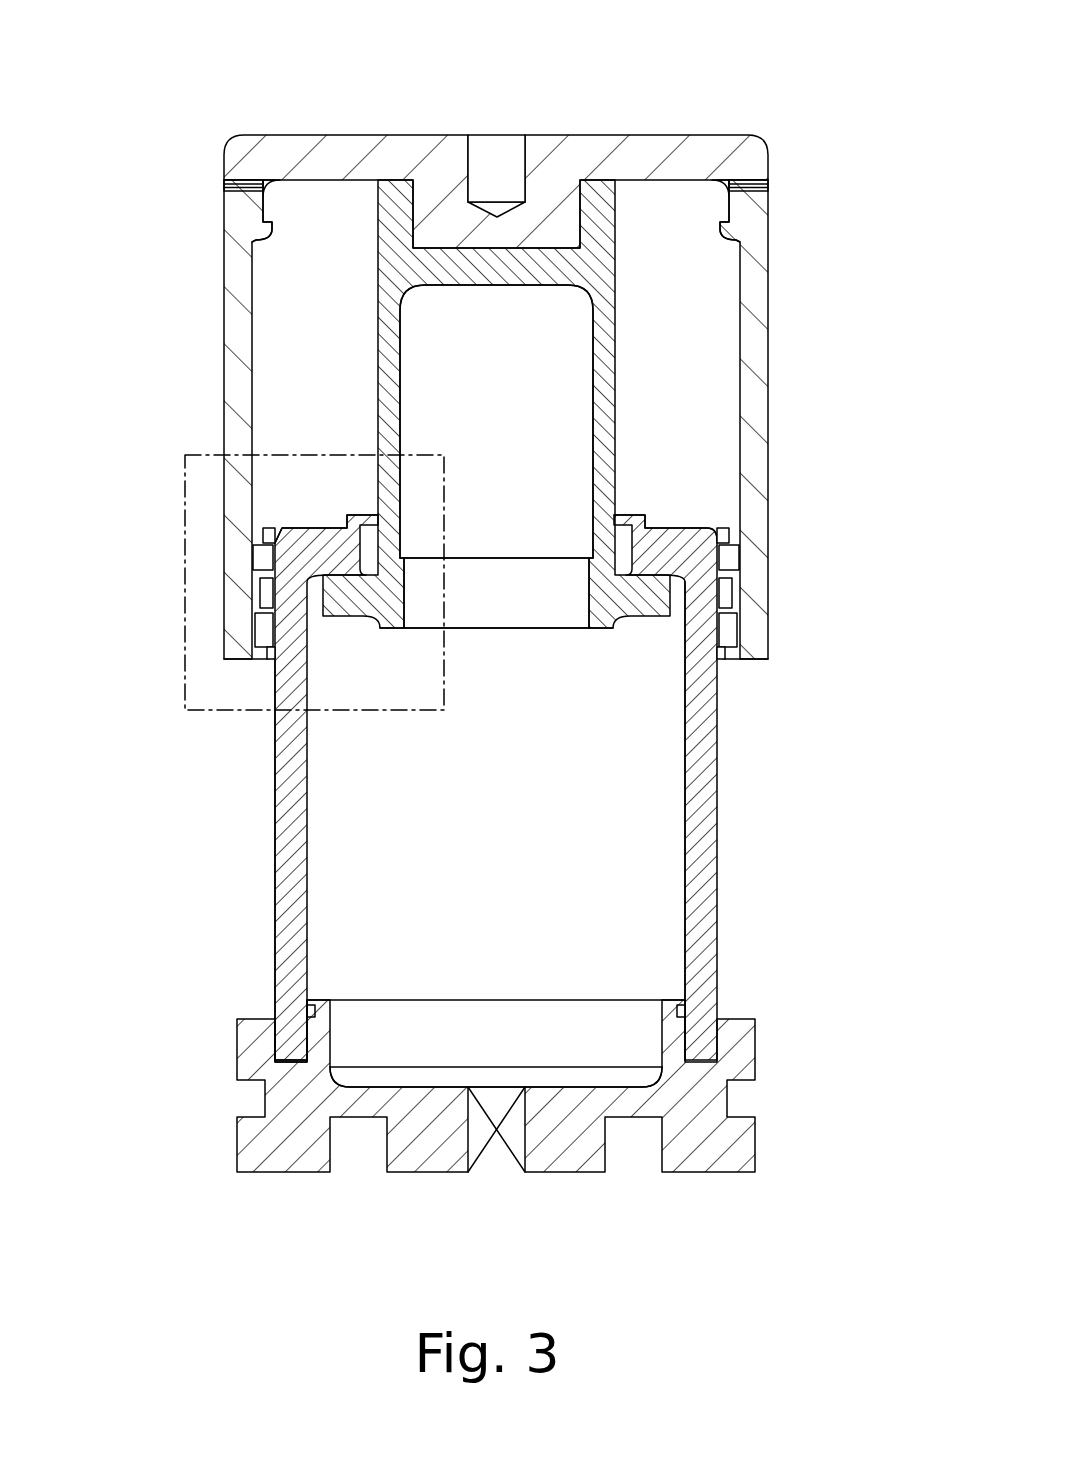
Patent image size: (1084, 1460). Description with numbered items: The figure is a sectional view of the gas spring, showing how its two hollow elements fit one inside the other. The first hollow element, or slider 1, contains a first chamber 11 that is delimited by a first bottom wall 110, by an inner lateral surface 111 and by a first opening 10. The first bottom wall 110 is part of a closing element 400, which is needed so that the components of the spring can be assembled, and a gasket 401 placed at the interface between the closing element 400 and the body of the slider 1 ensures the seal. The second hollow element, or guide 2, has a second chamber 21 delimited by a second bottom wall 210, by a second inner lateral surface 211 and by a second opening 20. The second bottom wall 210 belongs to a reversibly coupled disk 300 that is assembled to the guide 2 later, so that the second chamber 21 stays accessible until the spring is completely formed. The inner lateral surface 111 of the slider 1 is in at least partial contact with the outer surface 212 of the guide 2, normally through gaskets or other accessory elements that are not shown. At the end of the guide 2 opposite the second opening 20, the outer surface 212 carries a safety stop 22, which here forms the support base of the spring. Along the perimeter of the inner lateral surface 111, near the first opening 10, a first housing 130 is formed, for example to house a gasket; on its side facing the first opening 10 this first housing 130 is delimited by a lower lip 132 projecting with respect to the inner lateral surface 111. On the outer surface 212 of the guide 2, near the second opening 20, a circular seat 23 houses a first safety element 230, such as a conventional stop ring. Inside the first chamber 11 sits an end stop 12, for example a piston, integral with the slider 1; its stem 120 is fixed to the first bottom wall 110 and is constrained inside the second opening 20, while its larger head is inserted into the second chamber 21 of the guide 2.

The slider 1 is at (791, 179).
The first opening 10 is at (732, 674).
The first chamber 11 is at (706, 394).
The end stop 12 is at (622, 204).
The first bottom wall 110 is at (338, 196).
The inner lateral surface 111 is at (271, 348).
The stem 120 is at (620, 289).
The first housing 130 is at (263, 560).
The lower lip 132 is at (744, 563).
The guide 2 is at (293, 828).
The second opening 20 is at (637, 554).
The second chamber 21 is at (324, 941).
The safety stop 22 is at (255, 1003).
The circular seat 23 is at (270, 515).
The second bottom wall 210 is at (603, 1077).
The second inner lateral surface 211 is at (672, 914).
The outer surface 212 is at (263, 771).
The first safety element 230 is at (268, 539).
The reversibly coupled disk 300 is at (572, 1148).
The closing element 400 is at (585, 152).
The gasket 401 is at (240, 183).